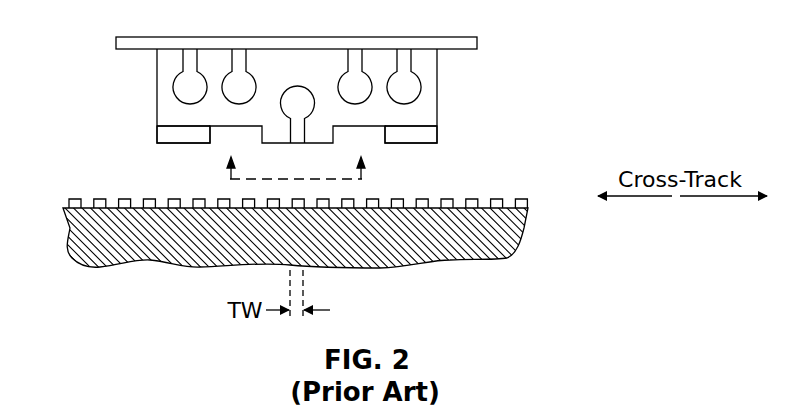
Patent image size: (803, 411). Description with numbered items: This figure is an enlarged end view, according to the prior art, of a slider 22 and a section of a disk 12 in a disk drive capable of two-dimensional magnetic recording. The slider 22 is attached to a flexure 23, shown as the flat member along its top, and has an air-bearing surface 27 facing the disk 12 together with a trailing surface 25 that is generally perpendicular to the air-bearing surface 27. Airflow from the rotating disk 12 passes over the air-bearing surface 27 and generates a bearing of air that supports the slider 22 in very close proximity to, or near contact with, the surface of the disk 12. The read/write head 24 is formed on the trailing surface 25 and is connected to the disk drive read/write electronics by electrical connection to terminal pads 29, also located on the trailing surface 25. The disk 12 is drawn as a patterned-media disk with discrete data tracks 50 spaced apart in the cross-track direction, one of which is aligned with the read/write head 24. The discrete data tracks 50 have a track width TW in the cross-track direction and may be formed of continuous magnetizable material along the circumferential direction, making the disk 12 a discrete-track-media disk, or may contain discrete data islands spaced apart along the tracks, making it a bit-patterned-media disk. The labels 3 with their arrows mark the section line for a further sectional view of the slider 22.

The disk 12 is at (515, 234).
The slider 22 is at (438, 115).
The flexure 23 is at (465, 37).
The read/write head 24 is at (295, 90).
The trailing surface 25 is at (163, 112).
The air-bearing surface 27 is at (183, 144).
The terminal pads 29 is at (223, 86).
The discrete data tracks 50 is at (98, 198).
The section line 3 is at (296, 155).